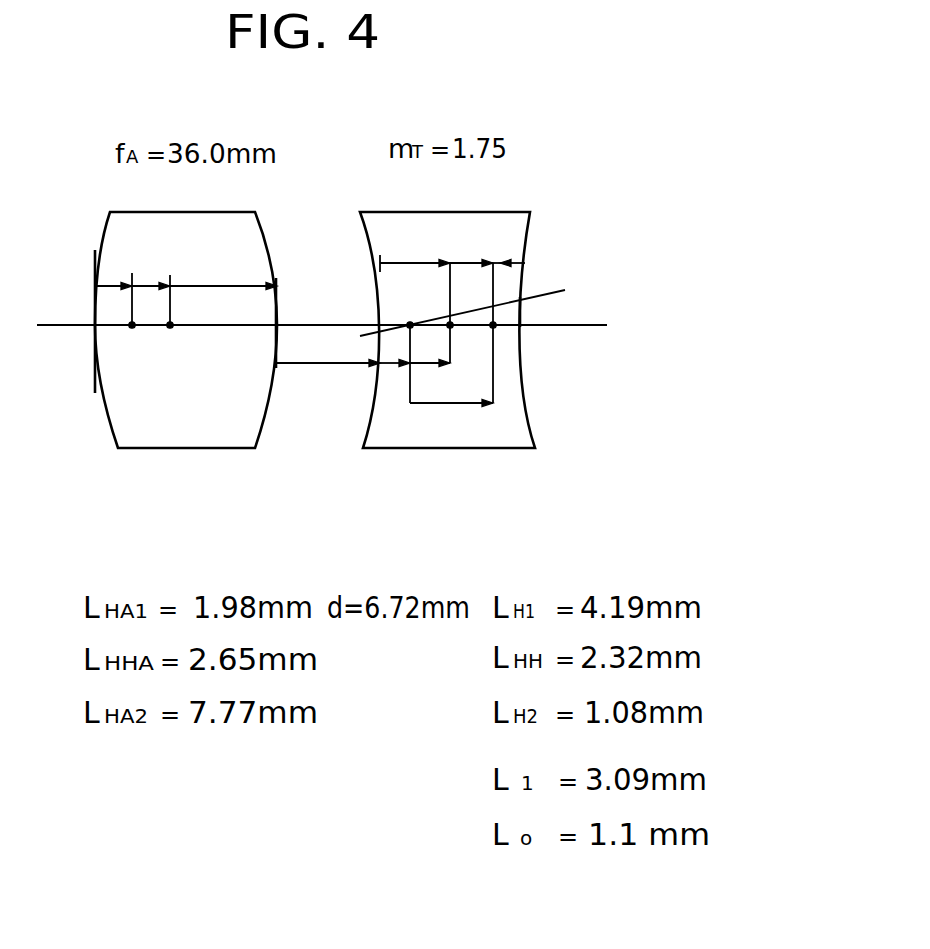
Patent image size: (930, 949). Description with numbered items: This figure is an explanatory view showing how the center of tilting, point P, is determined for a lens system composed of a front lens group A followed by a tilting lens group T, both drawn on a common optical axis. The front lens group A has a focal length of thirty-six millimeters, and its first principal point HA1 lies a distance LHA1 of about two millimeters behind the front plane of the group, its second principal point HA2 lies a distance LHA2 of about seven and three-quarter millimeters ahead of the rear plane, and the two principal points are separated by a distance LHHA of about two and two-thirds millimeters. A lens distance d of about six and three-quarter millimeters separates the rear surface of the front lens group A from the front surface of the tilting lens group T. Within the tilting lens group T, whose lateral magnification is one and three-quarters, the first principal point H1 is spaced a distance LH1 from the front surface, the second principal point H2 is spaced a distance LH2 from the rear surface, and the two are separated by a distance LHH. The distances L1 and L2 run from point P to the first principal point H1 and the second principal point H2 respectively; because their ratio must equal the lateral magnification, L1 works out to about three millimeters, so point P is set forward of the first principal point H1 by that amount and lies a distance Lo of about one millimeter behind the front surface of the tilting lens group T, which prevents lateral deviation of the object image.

The front lens group A is at (198, 449).
The tilting lens group T is at (450, 447).
The point P (center of tilting) P is at (410, 324).
The lens distance d is at (328, 381).
The first principal point of the front lens group HA1 is at (132, 326).
The second principal point of the front lens group HA2 is at (171, 326).
The first principal point of the tilting lens group H1 is at (452, 327).
The second principal point of the tilting lens group H2 is at (495, 327).
The distance of the first principal point HA1 from the front plane LHA1 is at (108, 283).
The distance between the first and second principal points of the front lens group LHHA is at (151, 283).
The distance of the second principal point HA2 from the rear plane LHA2 is at (205, 283).
The distance of the first principal point H1 from the front surface LH1 is at (440, 263).
The distance between the first and second principal points of the tilting lens group LHH is at (472, 263).
The distance of the second principal point H2 from the rear surface LH2 is at (506, 263).
The distance of point P from the front surface of the tilting lens group Lo is at (388, 366).
The distance of the first principal point H1 from point P L1 is at (428, 366).
The distance of the second principal point H2 from point P L2 is at (428, 405).